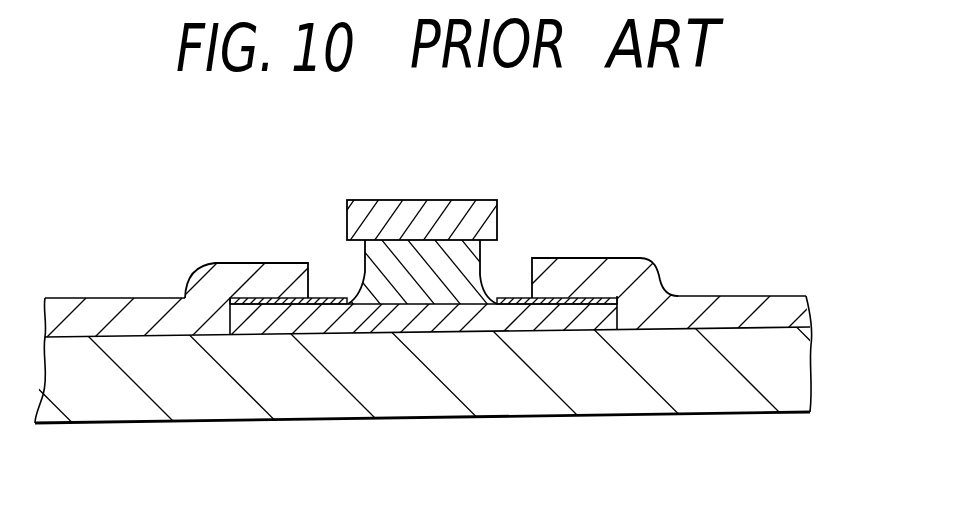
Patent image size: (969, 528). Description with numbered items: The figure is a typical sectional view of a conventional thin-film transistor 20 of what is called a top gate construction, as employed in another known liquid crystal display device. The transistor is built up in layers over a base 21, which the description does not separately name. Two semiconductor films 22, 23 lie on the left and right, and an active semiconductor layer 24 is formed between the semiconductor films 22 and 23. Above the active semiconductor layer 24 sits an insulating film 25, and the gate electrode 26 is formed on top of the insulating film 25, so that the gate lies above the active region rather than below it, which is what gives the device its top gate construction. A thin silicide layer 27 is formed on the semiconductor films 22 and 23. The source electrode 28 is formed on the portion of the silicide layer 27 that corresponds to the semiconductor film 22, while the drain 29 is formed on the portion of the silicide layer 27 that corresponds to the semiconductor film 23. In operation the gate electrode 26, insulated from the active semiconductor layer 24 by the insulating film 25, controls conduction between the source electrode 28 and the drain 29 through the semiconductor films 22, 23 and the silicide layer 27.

The thin-film transistor 20 is at (543, 215).
The substrate 21 is at (764, 328).
The semiconductor film 22 is at (240, 322).
The semiconductor film 23 is at (603, 317).
The active semiconductor layer 24 is at (450, 329).
The insulating film 25 is at (375, 272).
The gate electrode 26 is at (428, 205).
The silicide layer 27 is at (273, 300).
The source electrode 28 is at (232, 272).
The drain 29 is at (613, 268).